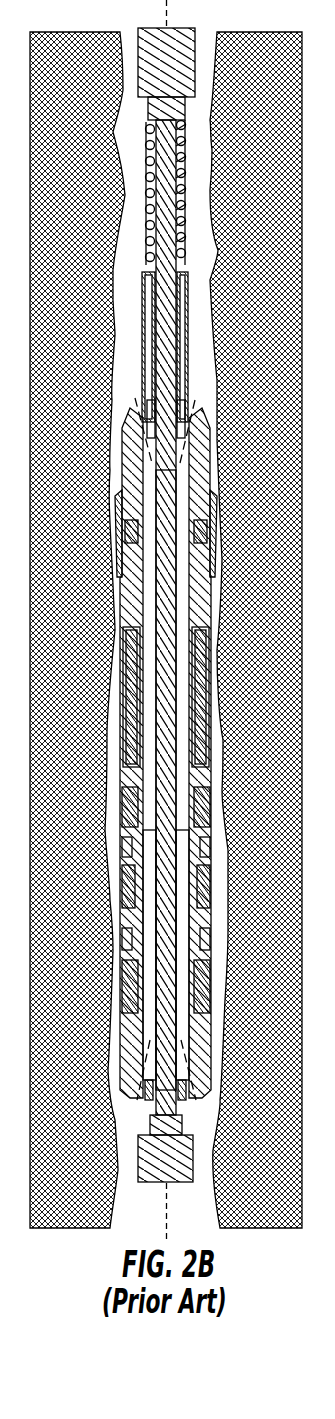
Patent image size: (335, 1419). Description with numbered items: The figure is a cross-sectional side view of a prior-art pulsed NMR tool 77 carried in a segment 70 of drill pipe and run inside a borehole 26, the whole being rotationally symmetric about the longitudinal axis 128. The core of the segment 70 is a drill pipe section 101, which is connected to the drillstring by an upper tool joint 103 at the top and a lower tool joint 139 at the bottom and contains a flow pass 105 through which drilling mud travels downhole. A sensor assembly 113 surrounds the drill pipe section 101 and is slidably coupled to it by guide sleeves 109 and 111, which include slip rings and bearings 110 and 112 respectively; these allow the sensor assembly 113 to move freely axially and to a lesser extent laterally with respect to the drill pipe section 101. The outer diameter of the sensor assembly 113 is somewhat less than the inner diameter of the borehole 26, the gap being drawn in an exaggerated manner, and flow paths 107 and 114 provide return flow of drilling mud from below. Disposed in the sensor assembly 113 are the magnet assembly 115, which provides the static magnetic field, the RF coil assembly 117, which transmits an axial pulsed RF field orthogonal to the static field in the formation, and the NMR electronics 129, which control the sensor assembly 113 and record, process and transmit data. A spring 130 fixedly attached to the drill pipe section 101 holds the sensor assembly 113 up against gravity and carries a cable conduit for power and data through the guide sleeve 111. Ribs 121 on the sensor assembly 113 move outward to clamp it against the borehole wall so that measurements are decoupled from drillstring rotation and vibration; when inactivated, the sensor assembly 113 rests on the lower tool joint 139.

The borehole 26 is at (223, 450).
The segment of drill pipe 70 is at (99, 297).
The pulsed NMR tool 77 is at (212, 748).
The drill pipe section 101 is at (182, 163).
The upper tool joint 103 is at (148, 63).
The flow pass 105 is at (155, 222).
The flow path 107 is at (147, 785).
The guide sleeve 109 is at (177, 1124).
The slip rings and bearings 110 is at (190, 1087).
The guide sleeve 111 is at (188, 332).
The slip rings and bearings 112 is at (183, 402).
The sensor assembly 113 is at (200, 600).
The flow path 114 is at (182, 845).
The magnet assembly 115 is at (208, 805).
The RF coil assembly 117 is at (125, 895).
The ribs 121 is at (117, 527).
The longitudinal axis 128 is at (162, 1213).
The NMR electronics 129 is at (128, 648).
The spring 130 is at (148, 147).
The lower tool joint 139 is at (185, 1162).